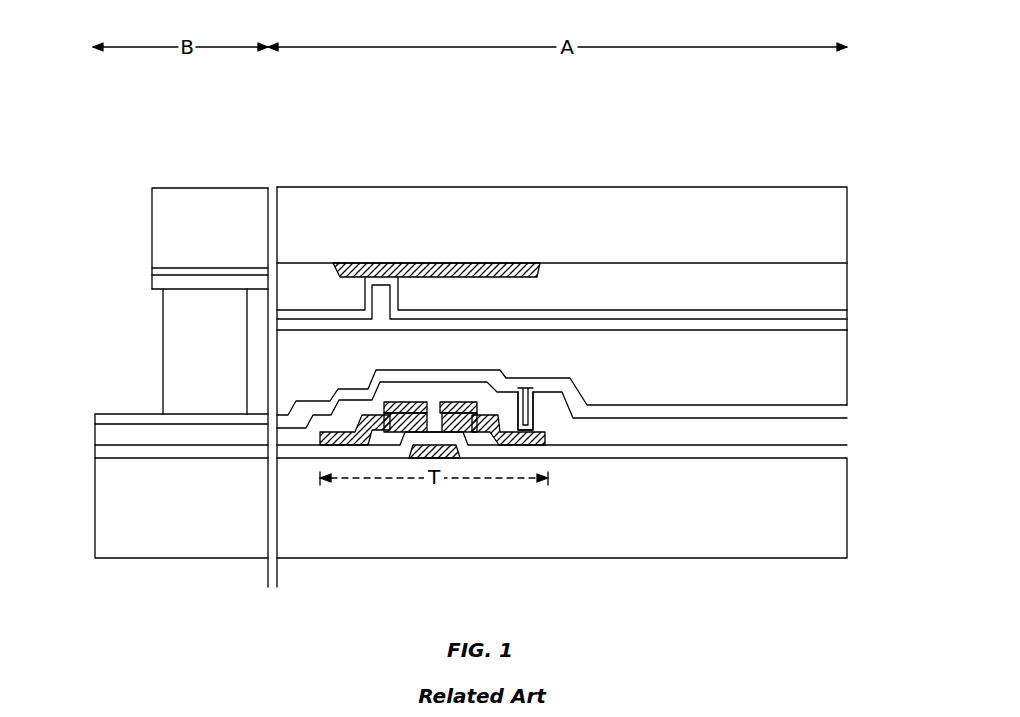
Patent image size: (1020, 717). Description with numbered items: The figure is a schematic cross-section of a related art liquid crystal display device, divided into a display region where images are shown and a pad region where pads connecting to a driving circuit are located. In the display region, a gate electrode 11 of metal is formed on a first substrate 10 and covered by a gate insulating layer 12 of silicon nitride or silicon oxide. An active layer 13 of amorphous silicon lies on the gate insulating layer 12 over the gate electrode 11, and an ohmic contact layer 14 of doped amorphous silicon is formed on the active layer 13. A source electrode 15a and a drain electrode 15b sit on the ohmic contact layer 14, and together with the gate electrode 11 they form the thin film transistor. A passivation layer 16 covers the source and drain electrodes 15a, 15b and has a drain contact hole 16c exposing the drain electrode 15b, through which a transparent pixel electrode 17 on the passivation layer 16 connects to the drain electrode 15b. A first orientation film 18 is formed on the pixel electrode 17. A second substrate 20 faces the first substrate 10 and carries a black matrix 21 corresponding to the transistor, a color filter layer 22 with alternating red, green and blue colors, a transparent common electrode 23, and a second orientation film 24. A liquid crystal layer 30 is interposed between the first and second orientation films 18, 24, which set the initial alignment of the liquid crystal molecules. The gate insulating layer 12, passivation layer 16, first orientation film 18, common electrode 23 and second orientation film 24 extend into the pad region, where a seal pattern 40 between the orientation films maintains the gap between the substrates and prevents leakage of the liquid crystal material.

The first substrate 10 is at (220, 547).
The gate electrode 11 is at (413, 457).
The gate insulating layer 12 is at (207, 452).
The active layer 13 is at (430, 427).
The ohmic contact layer 14 is at (384, 418).
The source electrode 15a is at (400, 404).
The drain electrode 15b is at (455, 404).
The passivation layer 16 is at (150, 435).
The drain contact hole 16c is at (525, 410).
The pixel electrode 17 is at (612, 412).
The first orientation film 18 is at (110, 417).
The second substrate 20 is at (178, 192).
The black matrix 21 is at (398, 270).
The color filter layer 22 is at (588, 280).
The common electrode 23 is at (232, 250).
The second orientation film 24 is at (170, 287).
The liquid crystal layer 30 is at (823, 365).
The seal pattern 40 is at (177, 308).